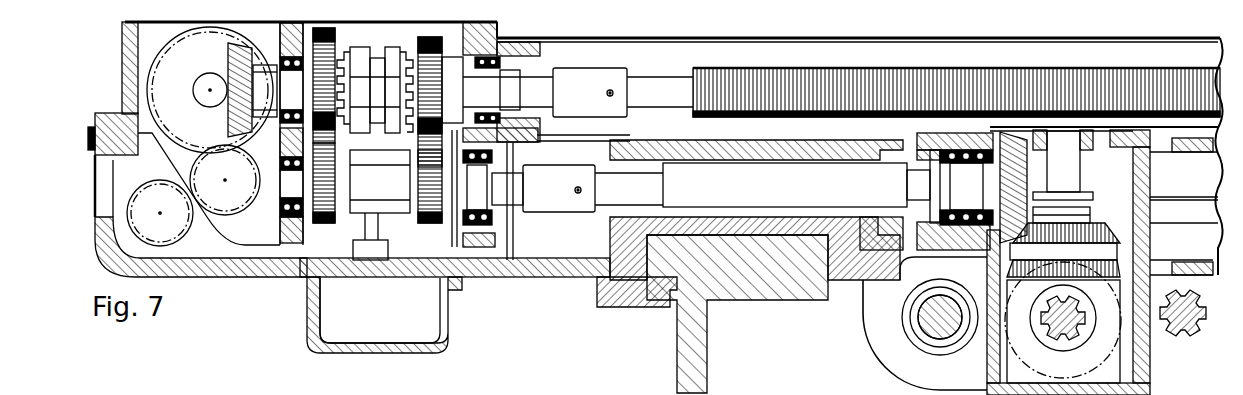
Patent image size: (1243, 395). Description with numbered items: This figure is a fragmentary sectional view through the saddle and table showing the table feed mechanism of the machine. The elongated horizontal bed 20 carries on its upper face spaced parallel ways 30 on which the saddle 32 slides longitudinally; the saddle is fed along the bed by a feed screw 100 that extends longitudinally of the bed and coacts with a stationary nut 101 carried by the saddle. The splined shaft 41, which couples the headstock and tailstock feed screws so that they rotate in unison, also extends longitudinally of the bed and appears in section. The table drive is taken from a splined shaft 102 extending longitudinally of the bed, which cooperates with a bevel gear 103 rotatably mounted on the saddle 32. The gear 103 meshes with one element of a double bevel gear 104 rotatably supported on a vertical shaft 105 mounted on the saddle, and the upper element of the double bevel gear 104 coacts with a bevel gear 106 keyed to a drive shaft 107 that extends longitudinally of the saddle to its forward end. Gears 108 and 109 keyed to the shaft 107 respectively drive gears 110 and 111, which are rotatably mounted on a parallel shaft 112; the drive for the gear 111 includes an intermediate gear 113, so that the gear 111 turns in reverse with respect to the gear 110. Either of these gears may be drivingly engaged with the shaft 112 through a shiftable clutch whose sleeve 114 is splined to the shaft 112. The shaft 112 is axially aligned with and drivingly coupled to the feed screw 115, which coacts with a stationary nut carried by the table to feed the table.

The bed 20 is at (688, 353).
The ways 30 is at (657, 245).
The saddle 32 is at (572, 279).
The shaft 41 is at (1193, 337).
The feed screw 100 is at (930, 308).
The stationary nut 101 is at (912, 317).
The splined shaft 102 is at (1048, 338).
The bevel gear 103 is at (1065, 372).
The double bevel gear 104 is at (1110, 228).
The vertical shaft 105 is at (1078, 170).
The bevel gear 106 is at (1013, 140).
The drive shaft 107 is at (780, 207).
The gear 108 is at (325, 224).
The gear 109 is at (432, 224).
The gear 110 is at (333, 40).
The gear 111 is at (430, 42).
The parallel shaft 112 is at (216, 90).
The intermediate gear 113 is at (417, 150).
The sleeve 114 is at (362, 50).
The feed screw 115 is at (810, 80).